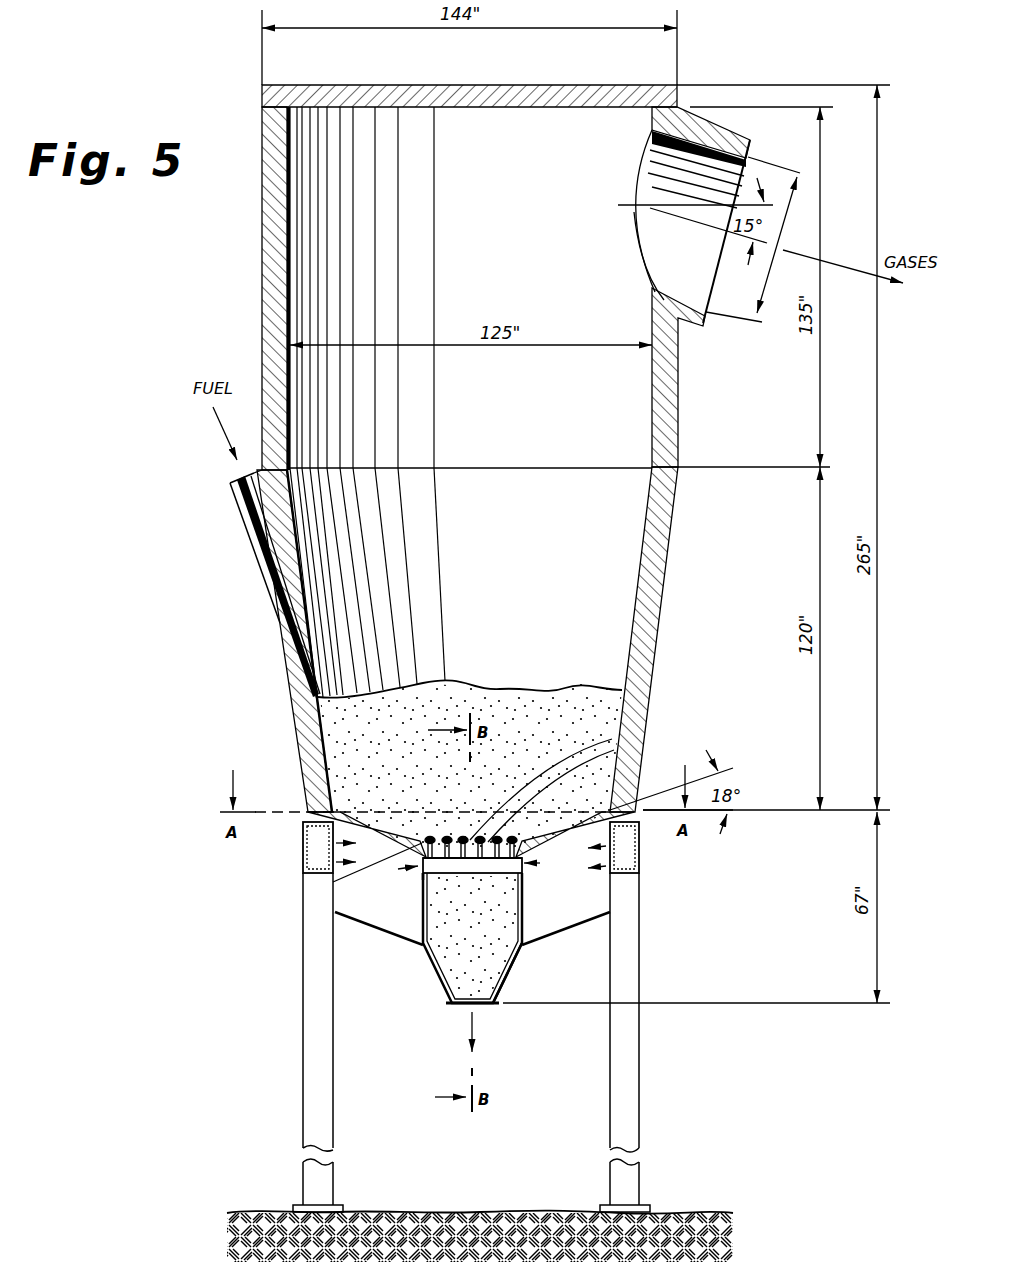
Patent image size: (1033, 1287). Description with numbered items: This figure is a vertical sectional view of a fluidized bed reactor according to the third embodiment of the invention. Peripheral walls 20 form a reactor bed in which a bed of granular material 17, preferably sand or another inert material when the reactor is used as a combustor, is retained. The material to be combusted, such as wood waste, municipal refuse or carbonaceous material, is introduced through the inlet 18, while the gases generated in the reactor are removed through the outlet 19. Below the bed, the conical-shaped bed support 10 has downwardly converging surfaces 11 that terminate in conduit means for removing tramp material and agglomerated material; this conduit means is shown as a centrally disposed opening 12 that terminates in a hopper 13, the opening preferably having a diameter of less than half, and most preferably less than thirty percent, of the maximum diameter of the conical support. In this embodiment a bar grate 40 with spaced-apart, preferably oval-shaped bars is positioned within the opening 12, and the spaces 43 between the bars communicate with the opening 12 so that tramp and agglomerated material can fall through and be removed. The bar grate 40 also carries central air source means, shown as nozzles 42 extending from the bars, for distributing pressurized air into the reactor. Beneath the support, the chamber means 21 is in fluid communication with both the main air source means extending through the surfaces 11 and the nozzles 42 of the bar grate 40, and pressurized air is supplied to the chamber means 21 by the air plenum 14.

The bed support 10 is at (430, 822).
The downwardly converging surfaces 11 is at (560, 843).
The centrally disposed opening 12 is at (500, 900).
The hopper 13 is at (520, 927).
The air plenum 14 is at (303, 860).
The bed of granular material 17 is at (367, 717).
The inlet 18 is at (242, 493).
The outlet 19 is at (747, 141).
The peripheral walls 20 is at (280, 547).
The chamber means 21 is at (348, 898).
The bar grate 40 is at (420, 878).
The nozzles 42 is at (333, 882).
The spaces 43 is at (612, 739).